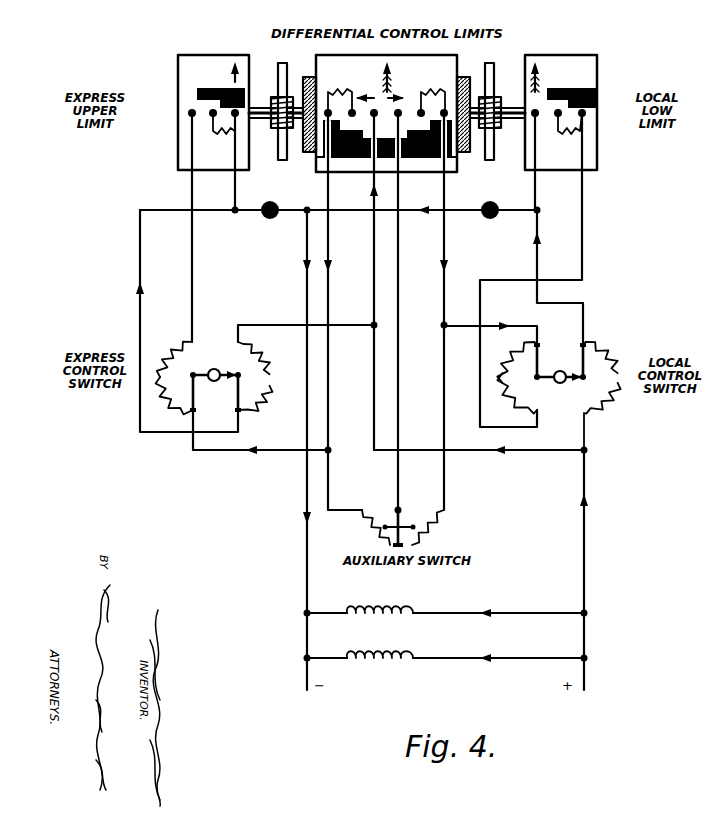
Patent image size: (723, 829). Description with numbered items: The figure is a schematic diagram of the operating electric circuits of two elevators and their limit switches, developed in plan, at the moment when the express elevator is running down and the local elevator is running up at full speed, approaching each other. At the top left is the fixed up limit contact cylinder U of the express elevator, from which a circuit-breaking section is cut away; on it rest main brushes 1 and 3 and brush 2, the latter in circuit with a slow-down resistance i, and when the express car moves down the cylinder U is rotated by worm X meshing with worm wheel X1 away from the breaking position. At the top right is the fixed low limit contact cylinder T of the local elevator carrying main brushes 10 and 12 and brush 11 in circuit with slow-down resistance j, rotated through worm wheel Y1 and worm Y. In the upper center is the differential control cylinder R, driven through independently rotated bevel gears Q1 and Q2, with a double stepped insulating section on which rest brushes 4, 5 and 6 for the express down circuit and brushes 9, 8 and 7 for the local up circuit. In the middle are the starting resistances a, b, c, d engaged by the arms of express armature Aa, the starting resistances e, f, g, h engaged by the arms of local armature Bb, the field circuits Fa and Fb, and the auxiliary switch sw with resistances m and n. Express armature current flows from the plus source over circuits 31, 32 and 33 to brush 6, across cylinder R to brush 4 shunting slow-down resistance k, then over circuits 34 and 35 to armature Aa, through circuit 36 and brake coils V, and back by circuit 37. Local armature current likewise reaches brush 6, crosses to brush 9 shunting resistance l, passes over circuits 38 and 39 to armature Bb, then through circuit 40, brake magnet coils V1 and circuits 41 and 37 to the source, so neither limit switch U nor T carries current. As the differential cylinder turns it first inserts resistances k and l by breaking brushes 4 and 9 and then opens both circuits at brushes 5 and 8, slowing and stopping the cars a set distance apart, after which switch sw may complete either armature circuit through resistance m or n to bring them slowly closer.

The brush 1 is at (189, 225).
The brush 2 is at (209, 118).
The brush 3 is at (231, 159).
The brush 4 is at (331, 140).
The brush 5 is at (355, 115).
The brush 6 is at (377, 140).
The brush 7 is at (401, 309).
The brush 8 is at (424, 115).
The brush 9 is at (447, 140).
The brush 10 is at (534, 152).
The brush 11 is at (558, 106).
The brush 12 is at (533, 268).
The circuit 31 is at (594, 570).
The circuit 32 is at (481, 458).
The circuit 33 is at (308, 311).
The circuit 34 is at (343, 341).
The circuit 35 is at (262, 441).
The circuit 36 is at (174, 321).
The circuit 37 is at (297, 330).
The circuit 38 is at (454, 341).
The circuit 39 is at (490, 326).
The circuit 40 is at (558, 277).
The circuit 41 is at (340, 218).
The up limit contact cylinder U is at (178, 78).
The low limit contact cylinder T is at (590, 72).
The differential control contact cylinder R is at (468, 44).
The worm X is at (277, 128).
The worm wheel X1 is at (276, 95).
The worm Y is at (494, 126).
The worm wheel Y1 is at (493, 92).
The bevel gear Q1 is at (308, 152).
The bevel gear Q2 is at (463, 152).
The electric brake coils V is at (272, 200).
The brake magnet coils V1 is at (493, 202).
The slow-down resistance i is at (224, 134).
The slow-down resistance j is at (567, 134).
The slow-down resistance k is at (340, 92).
The slow-down resistance l is at (433, 92).
The starting resistance a is at (174, 353).
The starting resistance b is at (169, 397).
The starting resistance c is at (256, 351).
The starting resistance d is at (261, 399).
The starting resistance e is at (516, 360).
The starting resistance f is at (512, 394).
The starting resistance g is at (606, 355).
The starting resistance h is at (602, 416).
The armature Aa is at (213, 385).
The armature Bb is at (556, 359).
The auxiliary control switch sw is at (396, 526).
The resistance m is at (370, 529).
The resistance n is at (428, 529).
The field circuit Fa is at (446, 604).
The field circuit Fb is at (446, 649).